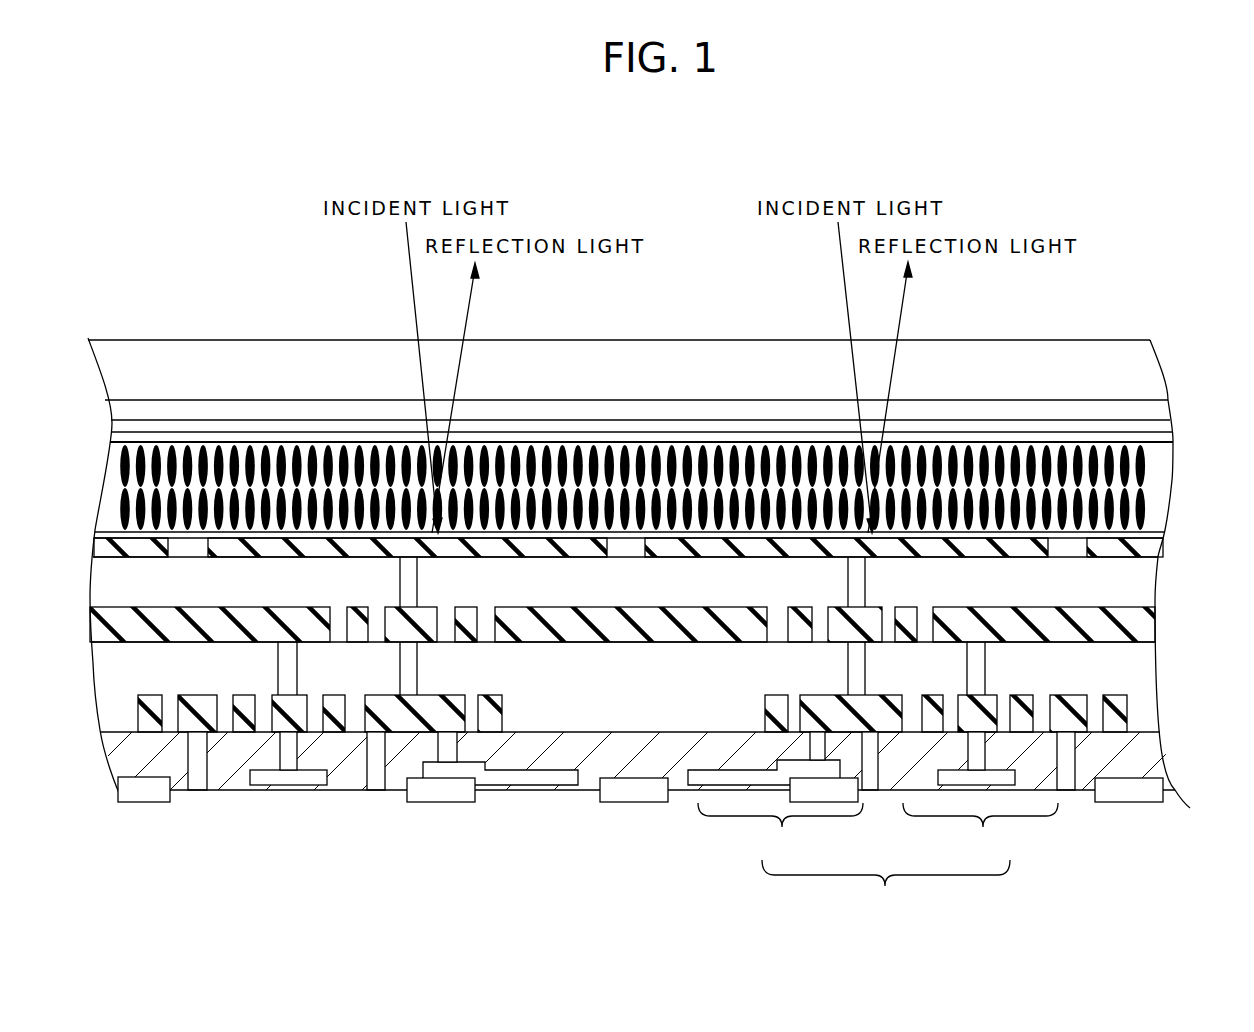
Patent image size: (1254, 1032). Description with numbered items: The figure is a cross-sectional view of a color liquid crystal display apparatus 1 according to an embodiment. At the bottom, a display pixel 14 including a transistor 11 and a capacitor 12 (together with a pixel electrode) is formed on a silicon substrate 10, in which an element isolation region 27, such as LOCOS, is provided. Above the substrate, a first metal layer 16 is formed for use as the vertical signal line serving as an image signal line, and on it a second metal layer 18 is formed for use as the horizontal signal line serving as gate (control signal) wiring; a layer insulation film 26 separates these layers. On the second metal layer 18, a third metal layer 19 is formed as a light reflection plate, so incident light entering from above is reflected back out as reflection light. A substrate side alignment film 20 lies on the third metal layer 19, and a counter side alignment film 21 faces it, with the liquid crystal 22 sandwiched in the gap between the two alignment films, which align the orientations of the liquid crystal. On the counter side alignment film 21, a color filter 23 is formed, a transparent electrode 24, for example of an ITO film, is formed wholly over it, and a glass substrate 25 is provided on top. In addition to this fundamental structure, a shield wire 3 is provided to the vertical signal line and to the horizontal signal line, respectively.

The color liquid crystal display apparatus 1 is at (1165, 300).
The shield wire 3 is at (910, 612).
The silicon substrate 10 is at (488, 861).
The transistor 11 is at (980, 830).
The capacitor 12 is at (780, 830).
The display pixel 14 is at (886, 890).
The first metal layer 16 is at (1063, 693).
The second metal layer 18 is at (1150, 628).
The third metal layer 19 is at (1152, 545).
The substrate side alignment film 20 is at (1150, 530).
The counter side alignment film 21 is at (1163, 437).
The liquid crystal 22 is at (1157, 477).
The color filter 23 is at (1164, 426).
The transparent electrode 24 is at (1140, 406).
The glass substrate 25 is at (1058, 352).
The layer insulation film 26 is at (1150, 578).
The element isolation region 27 is at (1160, 792).